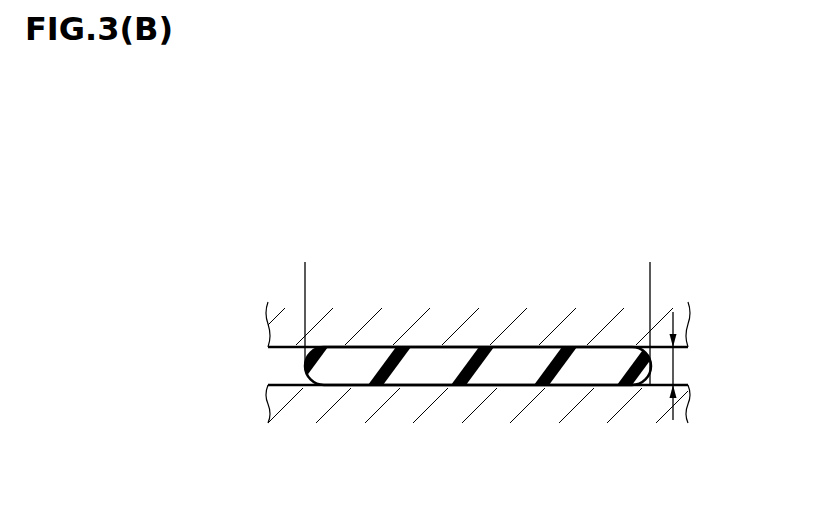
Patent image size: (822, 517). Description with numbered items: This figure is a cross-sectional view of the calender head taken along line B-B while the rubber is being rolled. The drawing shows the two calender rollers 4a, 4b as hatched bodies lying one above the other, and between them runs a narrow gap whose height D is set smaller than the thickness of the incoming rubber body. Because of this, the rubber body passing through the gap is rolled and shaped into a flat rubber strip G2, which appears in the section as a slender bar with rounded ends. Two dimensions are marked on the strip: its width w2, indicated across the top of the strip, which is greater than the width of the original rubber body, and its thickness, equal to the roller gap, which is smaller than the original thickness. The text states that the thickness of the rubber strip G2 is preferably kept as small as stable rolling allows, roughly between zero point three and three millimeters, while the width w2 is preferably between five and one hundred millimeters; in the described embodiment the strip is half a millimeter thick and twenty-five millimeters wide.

The calender roller 4a is at (282, 347).
The calender roller 4b is at (283, 385).
The rubber strip G2 is at (363, 378).
The width of the rubber strip w2 is at (650, 268).